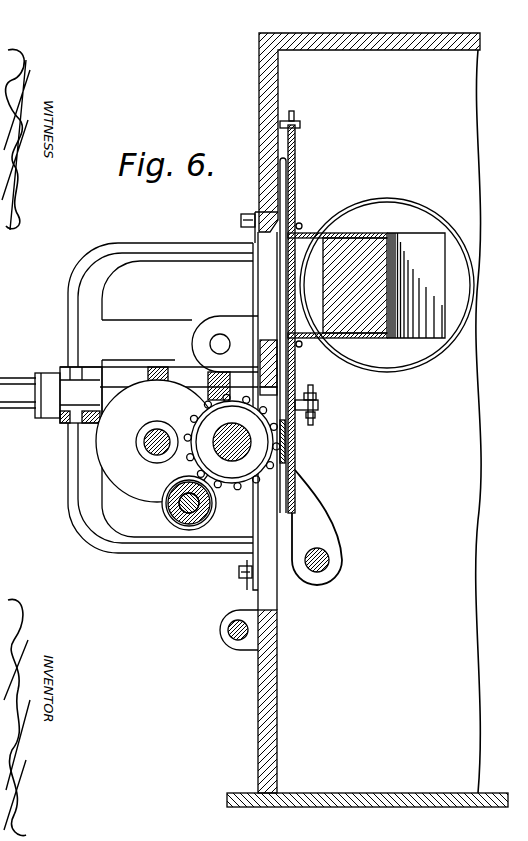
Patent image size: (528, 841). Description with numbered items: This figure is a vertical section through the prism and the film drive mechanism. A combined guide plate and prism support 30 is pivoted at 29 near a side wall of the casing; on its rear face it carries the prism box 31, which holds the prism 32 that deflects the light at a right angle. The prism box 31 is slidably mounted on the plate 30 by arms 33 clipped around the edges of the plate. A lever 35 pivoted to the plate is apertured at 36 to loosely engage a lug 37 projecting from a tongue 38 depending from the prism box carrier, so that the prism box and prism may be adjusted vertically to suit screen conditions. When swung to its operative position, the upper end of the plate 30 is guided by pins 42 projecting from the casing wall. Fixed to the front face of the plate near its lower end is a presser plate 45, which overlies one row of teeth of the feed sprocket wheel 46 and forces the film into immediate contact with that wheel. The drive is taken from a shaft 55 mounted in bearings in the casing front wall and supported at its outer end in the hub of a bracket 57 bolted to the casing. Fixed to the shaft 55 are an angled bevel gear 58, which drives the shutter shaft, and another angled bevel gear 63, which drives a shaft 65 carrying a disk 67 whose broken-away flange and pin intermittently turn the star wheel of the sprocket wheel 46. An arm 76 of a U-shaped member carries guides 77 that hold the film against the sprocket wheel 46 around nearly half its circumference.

The pivot 29 is at (335, 559).
The combined guide plate and prism support 30 is at (296, 450).
The prism box 31 is at (423, 243).
The prism 32 is at (338, 240).
The arms 33 is at (289, 279).
The lever 35 is at (314, 398).
The aperture 36 is at (320, 405).
The lug 37 is at (318, 418).
The tongue 38 is at (297, 384).
The pins 42 is at (303, 126).
The presser plate 45 is at (300, 478).
The feed sprocket wheel 46 is at (245, 488).
The shaft 55 is at (18, 400).
The bracket 57 is at (111, 262).
The angled bevel gear 58 is at (210, 378).
The angled bevel gear 63 is at (150, 372).
The shaft 65 is at (157, 451).
The disk 67 is at (103, 447).
The arm 76 is at (197, 520).
The guides 77 is at (172, 520).